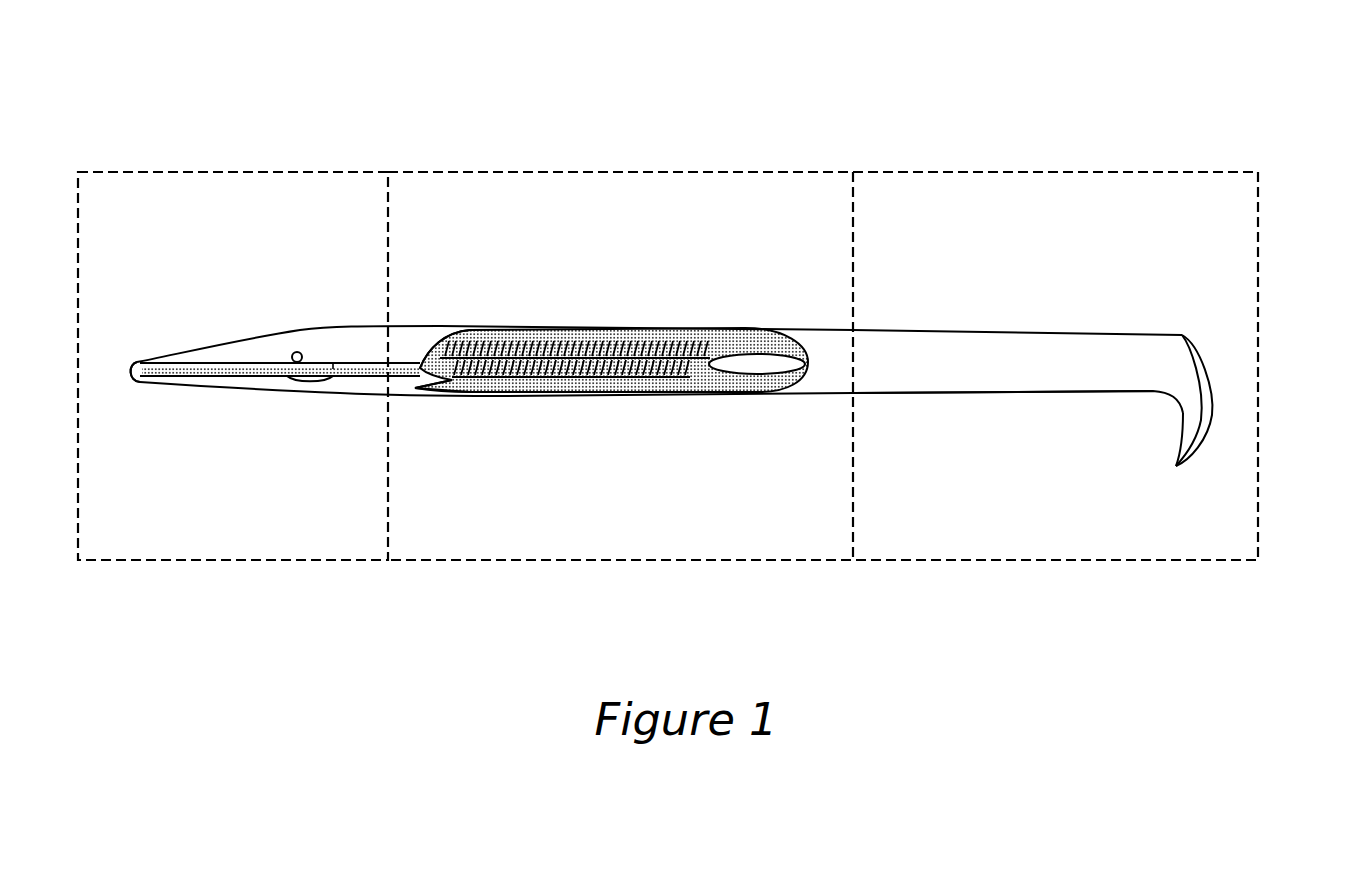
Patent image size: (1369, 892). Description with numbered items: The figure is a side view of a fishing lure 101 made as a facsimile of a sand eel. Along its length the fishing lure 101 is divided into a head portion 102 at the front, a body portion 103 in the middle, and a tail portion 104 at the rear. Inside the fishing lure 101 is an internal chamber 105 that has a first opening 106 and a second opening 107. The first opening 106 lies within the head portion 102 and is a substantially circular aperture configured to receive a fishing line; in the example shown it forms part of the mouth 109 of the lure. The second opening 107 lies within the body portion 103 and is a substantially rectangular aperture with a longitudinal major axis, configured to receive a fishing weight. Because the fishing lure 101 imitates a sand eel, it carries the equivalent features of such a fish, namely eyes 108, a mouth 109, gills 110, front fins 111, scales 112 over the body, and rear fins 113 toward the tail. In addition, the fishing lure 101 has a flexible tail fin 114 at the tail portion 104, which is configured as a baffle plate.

The fishing lure 101 is at (820, 142).
The head portion 102 is at (257, 233).
The body portion 103 is at (615, 230).
The tail portion 104 is at (1050, 228).
The internal chamber 105 is at (503, 390).
The first opening 106 is at (148, 385).
The second opening 107 is at (743, 386).
The eyes 108 is at (296, 352).
The mouth 109 is at (323, 376).
The gills 110 is at (405, 342).
The front fins 111 is at (457, 382).
The scales 112 is at (613, 385).
The rear fins 113 is at (737, 364).
The flexible tail fin 114 is at (1198, 422).